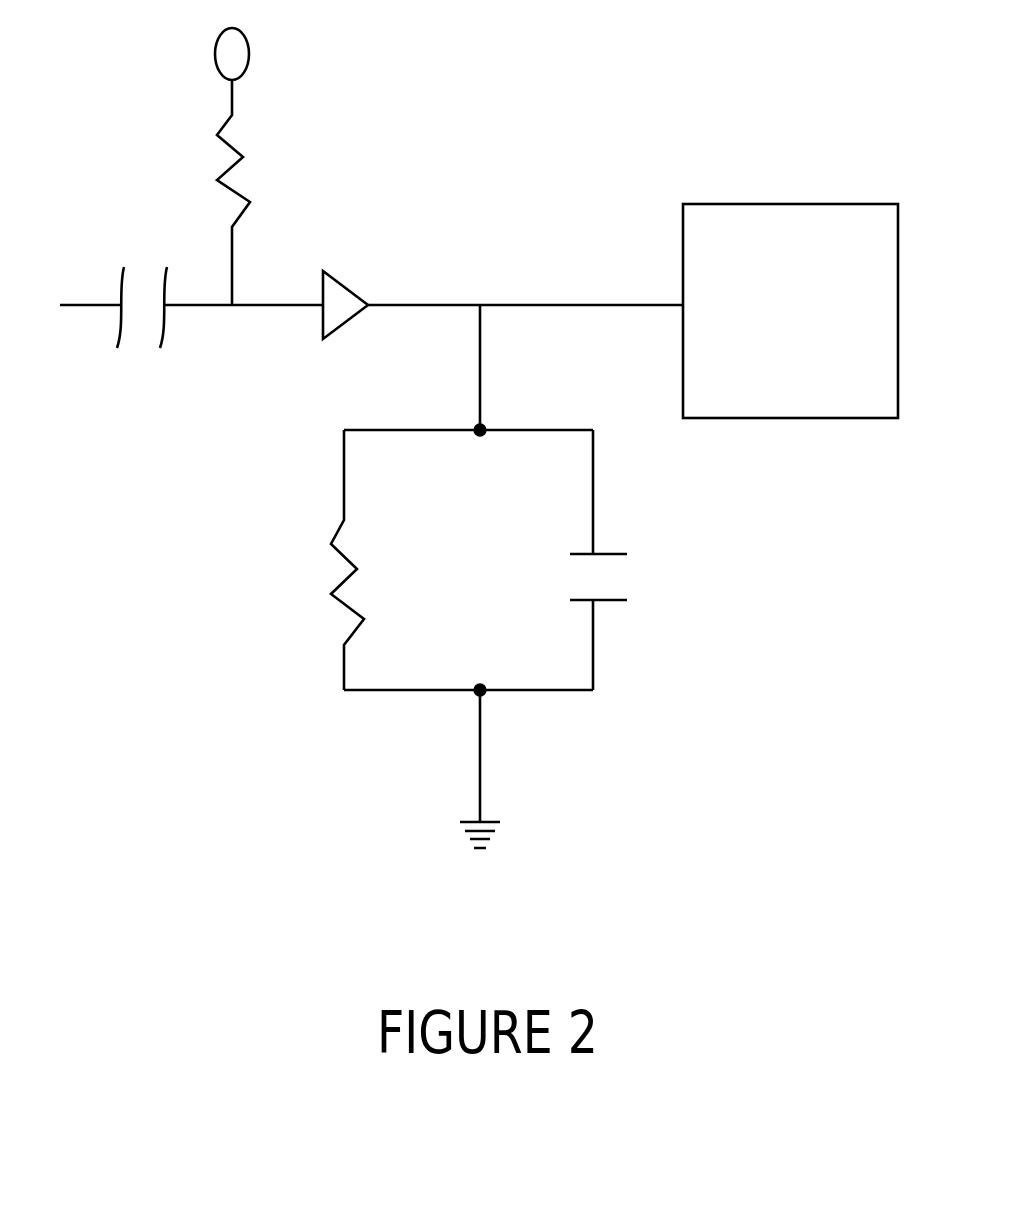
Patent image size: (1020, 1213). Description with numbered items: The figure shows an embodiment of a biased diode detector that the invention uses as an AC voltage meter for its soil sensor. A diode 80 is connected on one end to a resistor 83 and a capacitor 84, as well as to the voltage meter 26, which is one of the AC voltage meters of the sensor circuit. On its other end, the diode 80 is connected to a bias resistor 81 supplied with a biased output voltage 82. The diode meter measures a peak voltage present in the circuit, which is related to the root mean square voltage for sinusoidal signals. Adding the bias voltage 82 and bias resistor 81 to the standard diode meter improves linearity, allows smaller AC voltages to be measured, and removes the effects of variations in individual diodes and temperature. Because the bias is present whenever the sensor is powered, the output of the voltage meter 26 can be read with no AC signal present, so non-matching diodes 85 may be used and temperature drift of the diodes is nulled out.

The first voltage meter 26 is at (785, 418).
The diode 80 is at (345, 280).
The bias resistor 81 is at (223, 173).
The bias voltage 82 is at (249, 57).
The resistor 83 is at (347, 608).
The capacitor 84 is at (615, 605).
The non-matching diodes 85 is at (483, 425).